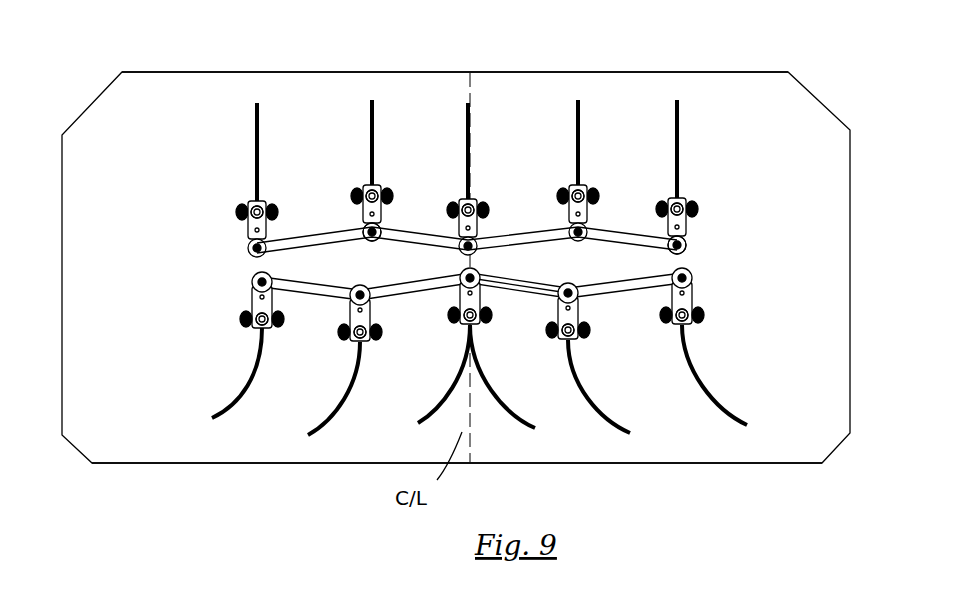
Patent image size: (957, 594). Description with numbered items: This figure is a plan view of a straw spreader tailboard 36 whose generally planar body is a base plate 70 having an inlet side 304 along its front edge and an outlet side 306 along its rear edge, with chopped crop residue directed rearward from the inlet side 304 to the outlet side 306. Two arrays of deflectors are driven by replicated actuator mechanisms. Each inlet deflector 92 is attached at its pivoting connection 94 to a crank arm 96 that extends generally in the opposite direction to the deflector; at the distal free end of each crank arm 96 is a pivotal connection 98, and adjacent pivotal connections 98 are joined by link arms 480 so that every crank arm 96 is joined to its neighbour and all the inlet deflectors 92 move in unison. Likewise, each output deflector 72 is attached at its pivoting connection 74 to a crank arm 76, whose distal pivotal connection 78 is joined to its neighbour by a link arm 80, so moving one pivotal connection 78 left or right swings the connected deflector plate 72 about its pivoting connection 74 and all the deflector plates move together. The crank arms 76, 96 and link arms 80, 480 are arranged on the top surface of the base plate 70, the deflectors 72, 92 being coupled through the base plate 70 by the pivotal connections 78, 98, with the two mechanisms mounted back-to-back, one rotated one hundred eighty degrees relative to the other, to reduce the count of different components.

The straw spreader tailboard 36 is at (146, 487).
The base plate 70 is at (790, 440).
The output deflector 72 is at (240, 402).
The pivoting connection 74 is at (240, 333).
The crank arm 76 is at (250, 308).
The pivotal connection 78 is at (253, 281).
The link arm 80 is at (521, 290).
The inlet deflector 92 is at (262, 133).
The pivoting connection 94 is at (388, 190).
The crank arm 96 is at (240, 214).
The pivotal connection 98 is at (368, 245).
The inlet side 304 is at (750, 70).
The outlet side 306 is at (680, 465).
The link arm 480 is at (315, 235).